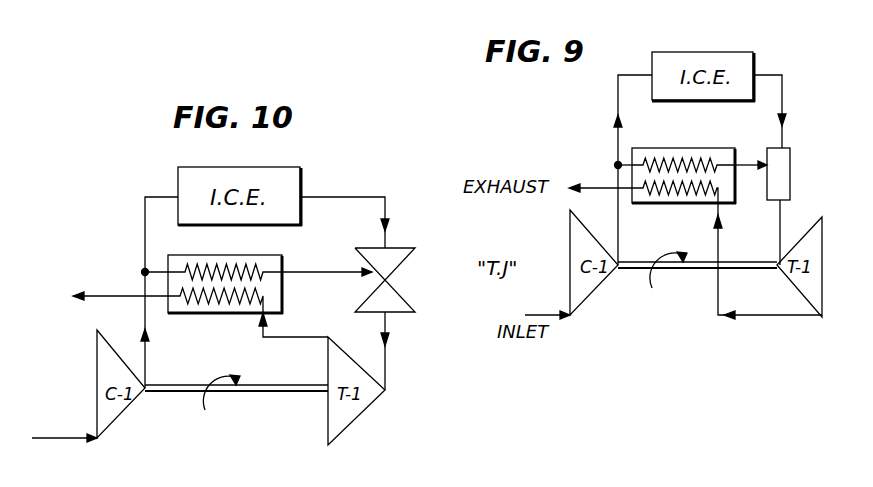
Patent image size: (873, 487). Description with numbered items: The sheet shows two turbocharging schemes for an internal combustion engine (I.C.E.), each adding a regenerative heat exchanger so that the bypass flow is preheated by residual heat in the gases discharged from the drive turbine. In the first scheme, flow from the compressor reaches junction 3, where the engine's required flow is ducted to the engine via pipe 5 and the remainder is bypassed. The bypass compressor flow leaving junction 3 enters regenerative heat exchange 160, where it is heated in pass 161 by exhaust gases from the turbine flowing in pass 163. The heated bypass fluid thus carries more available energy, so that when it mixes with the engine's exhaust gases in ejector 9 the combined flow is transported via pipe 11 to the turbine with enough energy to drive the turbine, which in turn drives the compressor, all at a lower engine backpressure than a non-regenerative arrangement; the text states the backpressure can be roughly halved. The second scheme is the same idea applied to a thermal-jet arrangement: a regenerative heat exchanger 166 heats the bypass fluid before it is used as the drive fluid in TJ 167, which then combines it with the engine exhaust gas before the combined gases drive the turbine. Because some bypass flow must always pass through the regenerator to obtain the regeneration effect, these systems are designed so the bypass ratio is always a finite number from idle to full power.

In FIG. 9, the junction 3 is at (616, 165).
In FIG. 9, the pipe 5 is at (618, 88).
In FIG. 9, the ejector 9 is at (783, 168).
In FIG. 9, the pipe 11 is at (780, 218).
In FIG. 9, the regenerative heat exchange 160 is at (737, 147).
In FIG. 9, the pass 161 is at (655, 160).
In FIG. 9, the pass 163 is at (642, 203).
In FIG. 10, the regenerative heat exchanger 166 is at (277, 255).
In FIG. 10, the TJ 167 is at (404, 262).